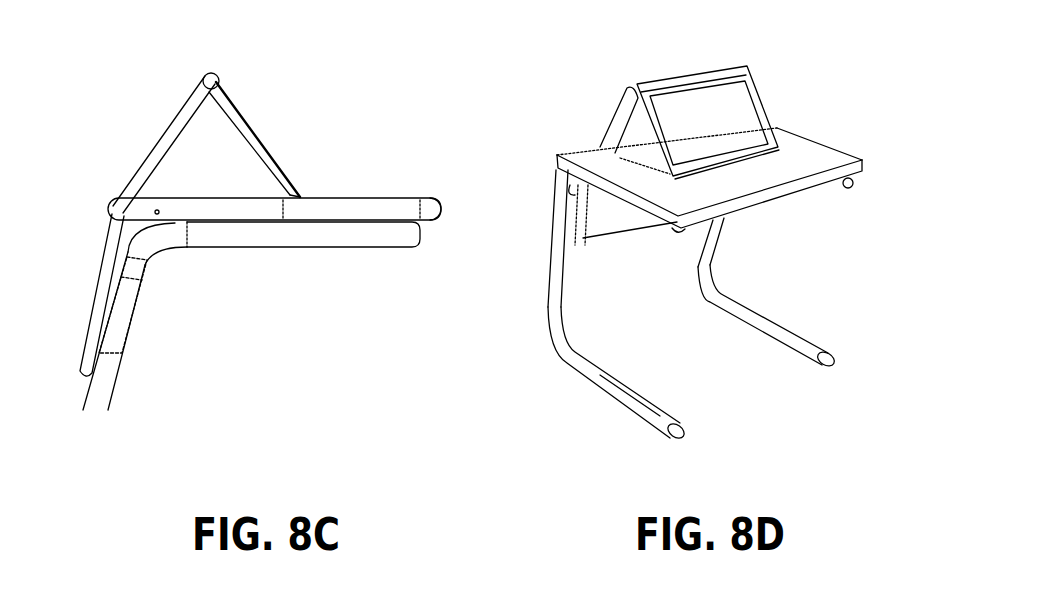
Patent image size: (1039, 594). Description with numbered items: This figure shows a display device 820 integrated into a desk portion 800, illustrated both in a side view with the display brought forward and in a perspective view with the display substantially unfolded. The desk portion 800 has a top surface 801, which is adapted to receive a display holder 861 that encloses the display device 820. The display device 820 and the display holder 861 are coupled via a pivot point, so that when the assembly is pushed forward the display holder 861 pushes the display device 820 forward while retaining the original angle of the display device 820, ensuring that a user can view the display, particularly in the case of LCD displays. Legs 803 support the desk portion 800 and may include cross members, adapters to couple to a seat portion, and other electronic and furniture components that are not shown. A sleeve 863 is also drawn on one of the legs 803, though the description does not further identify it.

In FIG. 8C, the desk portion 800 is at (262, 304).
In FIG. 8D, the desk portion 800 is at (726, 266).
In FIG. 8C, the top surface 801 is at (274, 163).
In FIG. 8D, the legs 803 is at (595, 403).
In FIG. 8C, the display device 820 is at (300, 112).
In FIG. 8D, the display device 820 is at (762, 99).
In FIG. 8C, the display holder 861 is at (180, 105).
In FIG. 8D, the display holder 861 is at (566, 81).
In FIG. 8C, the sleeve / slider on leg 863 is at (175, 305).